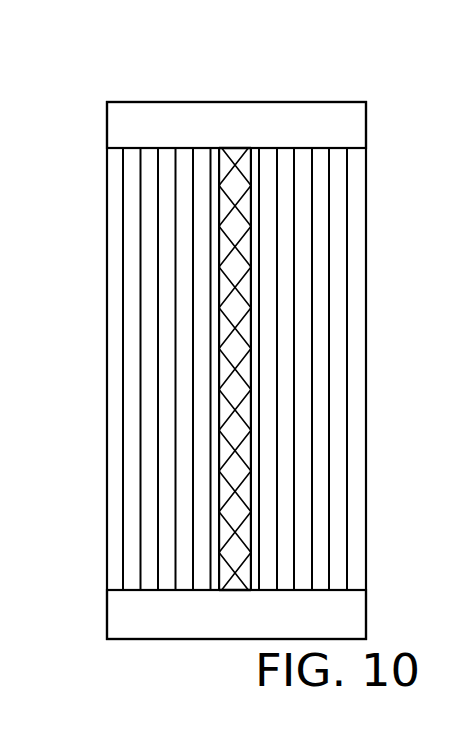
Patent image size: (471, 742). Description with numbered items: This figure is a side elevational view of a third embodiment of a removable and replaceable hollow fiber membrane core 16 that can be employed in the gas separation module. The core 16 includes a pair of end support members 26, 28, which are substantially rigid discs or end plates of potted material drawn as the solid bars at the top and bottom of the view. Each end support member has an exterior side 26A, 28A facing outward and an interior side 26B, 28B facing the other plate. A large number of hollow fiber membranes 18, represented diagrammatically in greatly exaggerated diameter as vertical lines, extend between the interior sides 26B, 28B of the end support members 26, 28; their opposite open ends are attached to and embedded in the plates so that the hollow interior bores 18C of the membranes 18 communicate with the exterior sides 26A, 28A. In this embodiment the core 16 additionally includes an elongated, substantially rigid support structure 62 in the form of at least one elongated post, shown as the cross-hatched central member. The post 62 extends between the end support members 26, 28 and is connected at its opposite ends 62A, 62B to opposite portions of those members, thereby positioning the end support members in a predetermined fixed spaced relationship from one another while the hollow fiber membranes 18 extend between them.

The hollow fiber membrane core 16 is at (313, 94).
The end support member 26 is at (367, 118).
The exterior side of end support member 26A is at (136, 102).
The interior side of end support member 26B is at (130, 148).
The end support member 28 is at (367, 610).
The exterior side of end support member 28A is at (147, 640).
The interior side of end support member 28B is at (136, 588).
The hollow fiber membranes 18 is at (138, 382).
The hollow interior bores 18C is at (342, 250).
The rigid support structure 62 is at (254, 372).
The end of rigid support structure 62A is at (254, 165).
The end of rigid support structure 62B is at (251, 573).